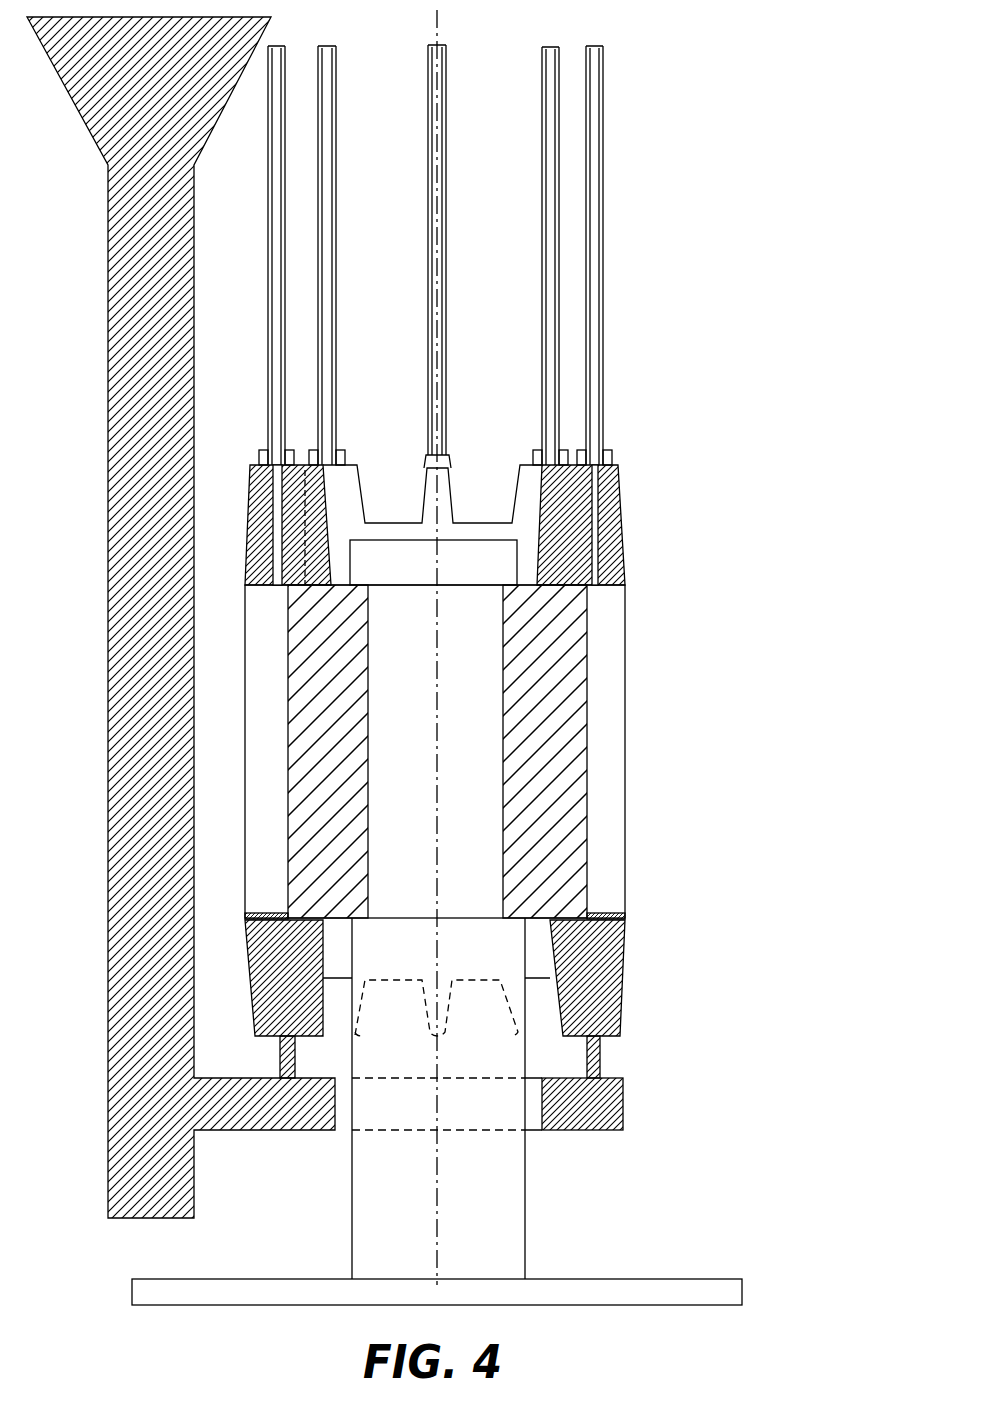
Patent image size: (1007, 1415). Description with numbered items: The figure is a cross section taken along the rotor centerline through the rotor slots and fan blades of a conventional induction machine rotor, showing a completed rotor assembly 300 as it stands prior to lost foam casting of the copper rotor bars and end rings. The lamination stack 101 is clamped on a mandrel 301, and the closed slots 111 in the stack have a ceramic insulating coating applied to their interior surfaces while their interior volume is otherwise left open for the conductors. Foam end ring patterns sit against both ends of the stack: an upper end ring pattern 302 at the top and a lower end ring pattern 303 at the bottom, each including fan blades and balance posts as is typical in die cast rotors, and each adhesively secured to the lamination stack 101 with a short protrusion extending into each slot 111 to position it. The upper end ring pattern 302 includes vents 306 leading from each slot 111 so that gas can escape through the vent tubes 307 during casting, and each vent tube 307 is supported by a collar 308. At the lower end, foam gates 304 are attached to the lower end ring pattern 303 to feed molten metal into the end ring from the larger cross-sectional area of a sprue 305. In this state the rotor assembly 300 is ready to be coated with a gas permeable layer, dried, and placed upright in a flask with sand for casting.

The completed rotor assembly 300 is at (737, 911).
The lamination stack 101 is at (627, 770).
The slots 111 is at (257, 880).
The mandrel 301 is at (498, 697).
The upper end ring pattern 302 is at (625, 550).
The lower end ring pattern 303 is at (625, 958).
The foam gates 304 is at (280, 1056).
The sprue 305 is at (107, 740).
The vents 306 is at (273, 492).
The vent tubes 307 is at (548, 227).
The collar 308 is at (605, 453).